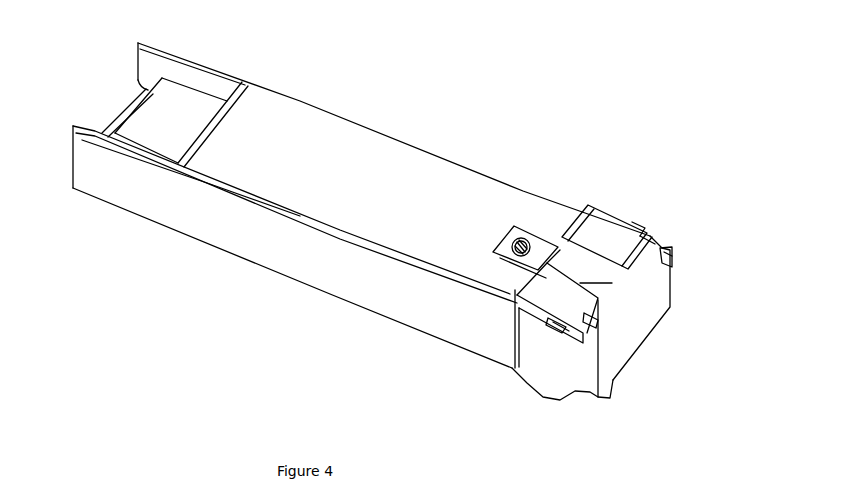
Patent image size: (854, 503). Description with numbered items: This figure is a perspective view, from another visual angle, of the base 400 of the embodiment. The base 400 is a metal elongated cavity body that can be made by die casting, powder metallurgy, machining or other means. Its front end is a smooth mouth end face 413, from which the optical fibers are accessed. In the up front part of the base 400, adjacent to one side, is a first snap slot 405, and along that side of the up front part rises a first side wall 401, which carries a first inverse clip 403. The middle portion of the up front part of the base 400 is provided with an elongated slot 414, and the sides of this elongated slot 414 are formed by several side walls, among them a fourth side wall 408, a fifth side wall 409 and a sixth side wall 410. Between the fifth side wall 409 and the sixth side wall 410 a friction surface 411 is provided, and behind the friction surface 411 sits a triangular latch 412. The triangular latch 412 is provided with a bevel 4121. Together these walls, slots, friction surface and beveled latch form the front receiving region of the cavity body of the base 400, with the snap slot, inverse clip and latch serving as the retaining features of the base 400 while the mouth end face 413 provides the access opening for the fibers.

The base 400 is at (245, 285).
The first side wall 401 is at (513, 368).
The first inverse clip 403 is at (547, 382).
The first snap slot 405 is at (603, 376).
The fourth side wall 408 is at (662, 246).
The fifth side wall 409 is at (652, 205).
The sixth side wall 410 is at (607, 208).
The friction surface 411 is at (532, 201).
The triangular latch 412 is at (517, 177).
The bevel 4121 is at (489, 173).
The smooth mouth end face 413 is at (687, 308).
The elongated slot 414 is at (628, 348).